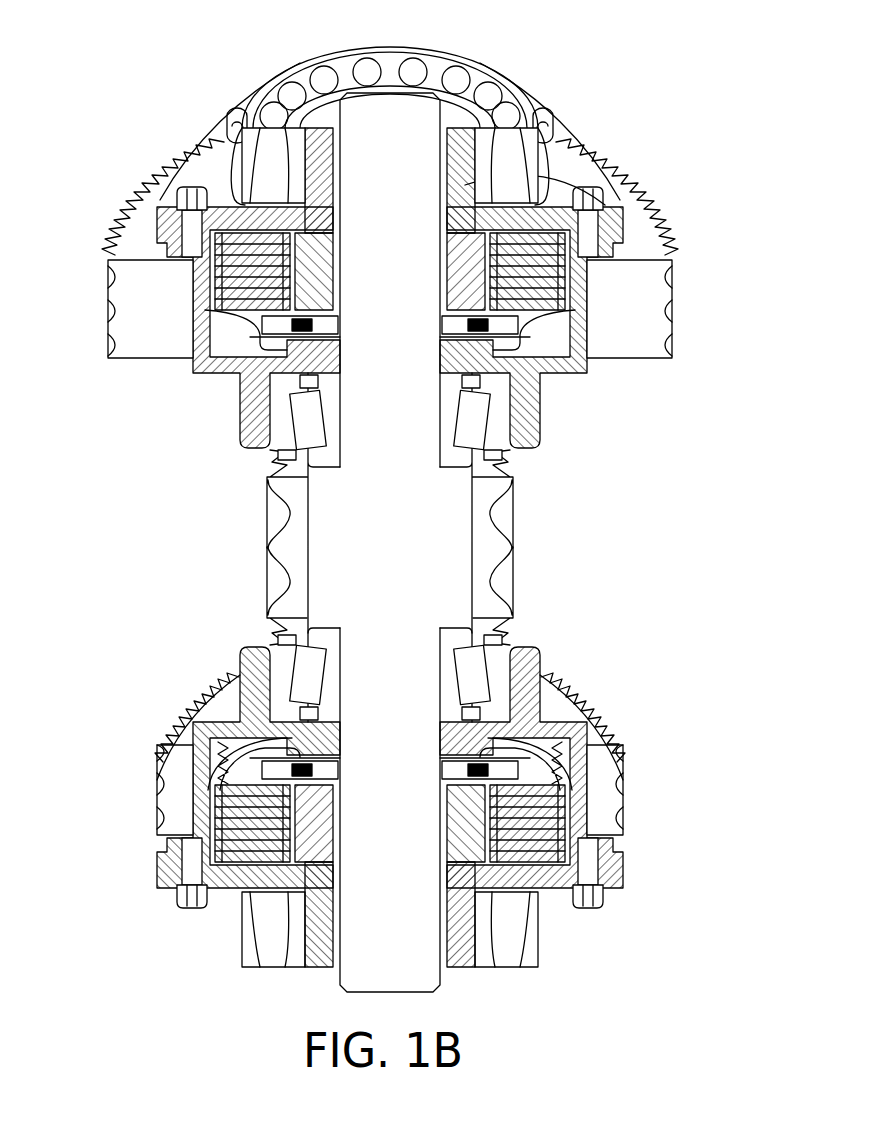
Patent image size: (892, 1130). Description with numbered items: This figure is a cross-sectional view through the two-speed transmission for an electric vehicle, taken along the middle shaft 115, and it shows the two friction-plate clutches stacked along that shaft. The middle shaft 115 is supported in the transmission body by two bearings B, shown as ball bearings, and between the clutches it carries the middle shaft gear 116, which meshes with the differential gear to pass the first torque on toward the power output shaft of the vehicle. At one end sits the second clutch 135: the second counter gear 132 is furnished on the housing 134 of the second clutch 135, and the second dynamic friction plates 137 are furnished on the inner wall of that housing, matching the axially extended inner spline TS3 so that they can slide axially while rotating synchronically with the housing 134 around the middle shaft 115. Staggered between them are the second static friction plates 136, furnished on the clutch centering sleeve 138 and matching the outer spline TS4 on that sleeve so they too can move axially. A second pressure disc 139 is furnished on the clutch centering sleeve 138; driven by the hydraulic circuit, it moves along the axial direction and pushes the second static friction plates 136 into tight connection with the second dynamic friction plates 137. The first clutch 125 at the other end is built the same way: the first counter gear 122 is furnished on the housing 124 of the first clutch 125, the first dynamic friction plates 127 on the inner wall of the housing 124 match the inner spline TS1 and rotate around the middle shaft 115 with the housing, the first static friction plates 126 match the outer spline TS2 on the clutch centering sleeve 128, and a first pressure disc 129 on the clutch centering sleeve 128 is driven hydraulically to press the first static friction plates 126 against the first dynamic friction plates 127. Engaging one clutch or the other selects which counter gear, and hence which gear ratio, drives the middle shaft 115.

The middle shaft 115 is at (390, 93).
The bearings B is at (304, 67).
The housing of the second clutch 134 is at (228, 200).
The clutch centering sleeve 138 is at (630, 195).
The second static friction plates 136 is at (590, 243).
The second dynamic friction plates 137 is at (573, 260).
The second pressure disc 139 is at (467, 319).
The second clutch 135 is at (491, 239).
The second counter gear 132 is at (148, 343).
The inner spline TS3 is at (192, 310).
The outer spline TS4 is at (232, 312).
The middle shaft gear 116 is at (277, 549).
The clutch centering sleeve 128 is at (617, 740).
The first pressure disc 129 is at (587, 763).
The first dynamic friction plates 127 is at (587, 803).
The first static friction plates 126 is at (587, 817).
The first clutch 125 is at (493, 852).
The outer spline TS2 is at (195, 748).
The inner spline TS1 is at (197, 765).
The first counter gear 122 is at (173, 806).
The housing of the first clutch 124 is at (223, 888).